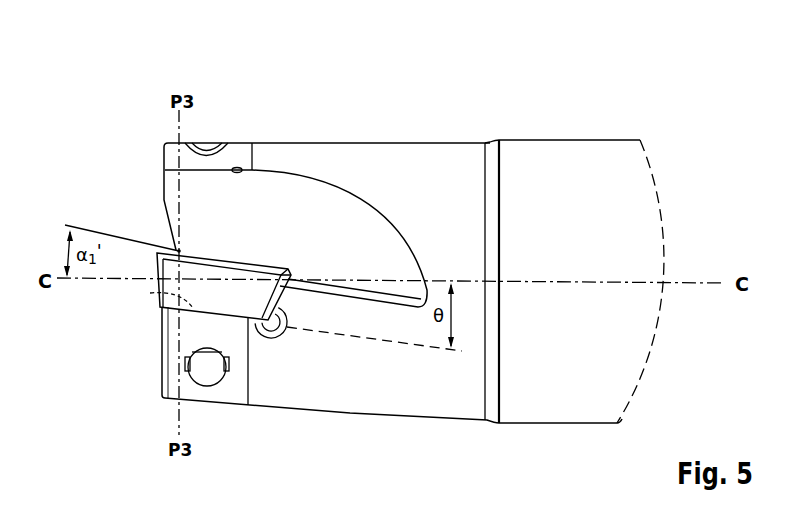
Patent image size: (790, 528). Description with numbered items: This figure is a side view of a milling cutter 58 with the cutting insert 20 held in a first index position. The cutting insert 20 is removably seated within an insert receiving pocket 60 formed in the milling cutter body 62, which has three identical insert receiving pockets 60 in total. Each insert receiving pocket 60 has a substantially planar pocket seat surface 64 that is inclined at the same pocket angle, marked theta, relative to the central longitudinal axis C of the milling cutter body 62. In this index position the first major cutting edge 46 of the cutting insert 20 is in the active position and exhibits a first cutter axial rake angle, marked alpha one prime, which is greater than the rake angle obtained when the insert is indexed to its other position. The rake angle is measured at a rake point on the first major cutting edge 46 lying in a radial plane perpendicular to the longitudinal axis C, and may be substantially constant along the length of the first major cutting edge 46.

The milling cutter 58 is at (413, 123).
The first major cutting edge 46 is at (210, 253).
The cutting insert 20 is at (228, 297).
The insert receiving pocket 60 is at (283, 295).
The milling cutter body 62 is at (423, 374).
The pocket seat surface 64 is at (158, 293).